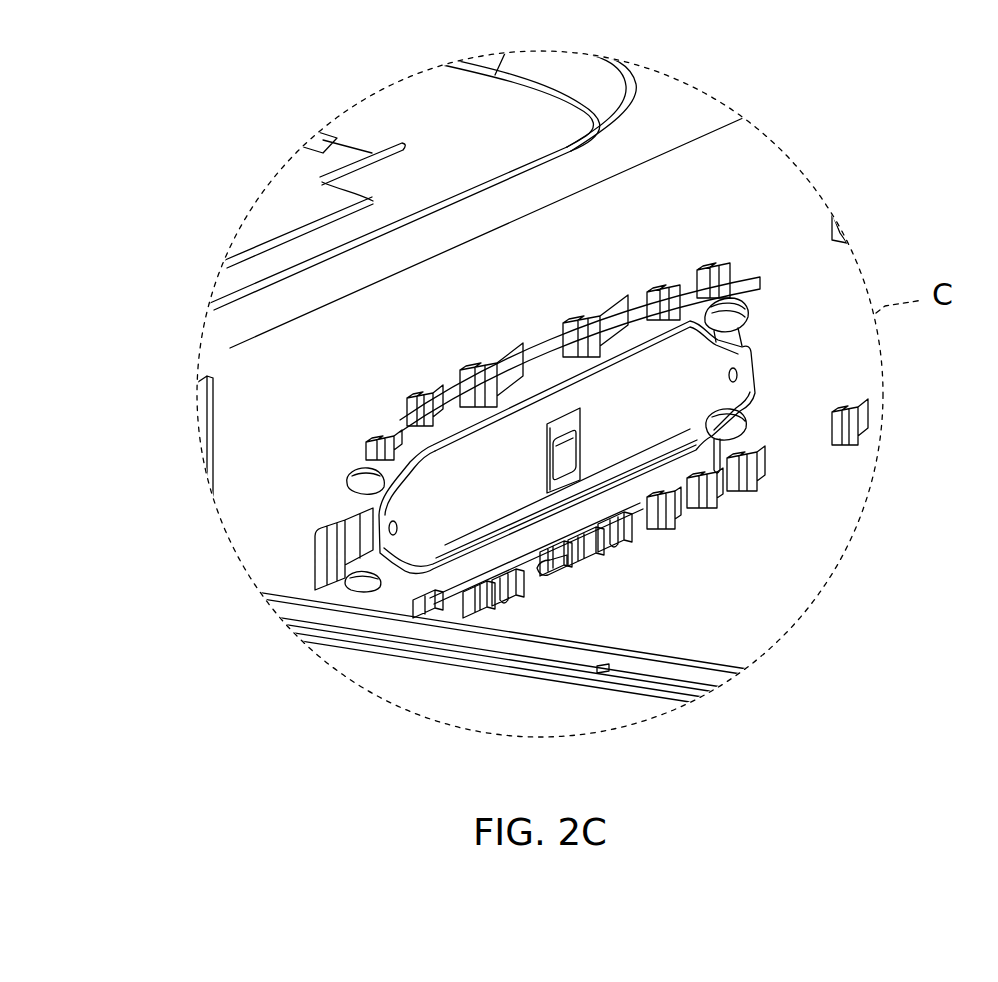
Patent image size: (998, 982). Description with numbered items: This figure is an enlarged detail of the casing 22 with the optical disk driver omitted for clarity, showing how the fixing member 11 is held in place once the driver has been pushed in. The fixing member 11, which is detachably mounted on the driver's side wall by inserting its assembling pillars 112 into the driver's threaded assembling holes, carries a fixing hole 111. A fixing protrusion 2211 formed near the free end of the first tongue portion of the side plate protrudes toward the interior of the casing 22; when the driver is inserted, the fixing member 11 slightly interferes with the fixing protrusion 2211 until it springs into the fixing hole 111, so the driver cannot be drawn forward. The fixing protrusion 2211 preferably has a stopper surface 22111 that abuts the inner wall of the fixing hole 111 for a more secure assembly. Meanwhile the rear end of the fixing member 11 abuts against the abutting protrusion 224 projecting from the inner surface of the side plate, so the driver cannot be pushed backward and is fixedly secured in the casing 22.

The fixing member 11 is at (550, 498).
The fixing hole 111 is at (580, 423).
The assembling pillars 112 is at (360, 480).
The casing 22 is at (265, 368).
The fixing protrusion 2211 is at (560, 453).
The stopper surface 22111 is at (550, 480).
The abutting protrusion 224 is at (367, 538).